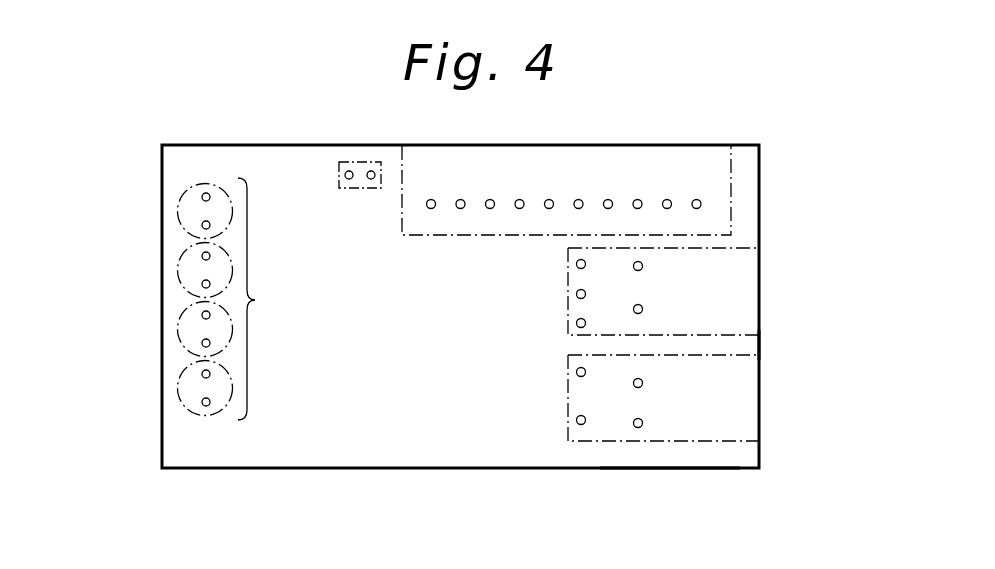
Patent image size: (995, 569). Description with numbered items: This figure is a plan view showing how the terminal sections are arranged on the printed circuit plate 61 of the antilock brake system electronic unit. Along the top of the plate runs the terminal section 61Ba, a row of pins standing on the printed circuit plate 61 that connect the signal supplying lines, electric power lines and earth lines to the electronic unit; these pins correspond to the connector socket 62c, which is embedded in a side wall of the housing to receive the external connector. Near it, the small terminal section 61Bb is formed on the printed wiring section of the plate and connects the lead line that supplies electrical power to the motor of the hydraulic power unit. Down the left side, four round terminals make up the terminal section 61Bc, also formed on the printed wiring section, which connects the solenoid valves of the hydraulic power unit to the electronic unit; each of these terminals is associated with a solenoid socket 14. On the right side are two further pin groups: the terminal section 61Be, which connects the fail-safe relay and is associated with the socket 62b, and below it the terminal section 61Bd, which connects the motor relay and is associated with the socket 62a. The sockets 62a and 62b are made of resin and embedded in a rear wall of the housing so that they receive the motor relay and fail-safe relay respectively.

The solenoid socket 14 is at (178, 218).
The printed circuit plate 61 is at (759, 228).
The terminal section 61Ba is at (712, 200).
The terminal section 61Bb is at (383, 192).
The terminal section 61Bc is at (280, 299).
The terminal section 61Bd is at (566, 357).
The terminal section 61Be is at (566, 250).
The socket 62a is at (683, 443).
The socket 62b is at (728, 336).
The connector socket 62c is at (731, 165).